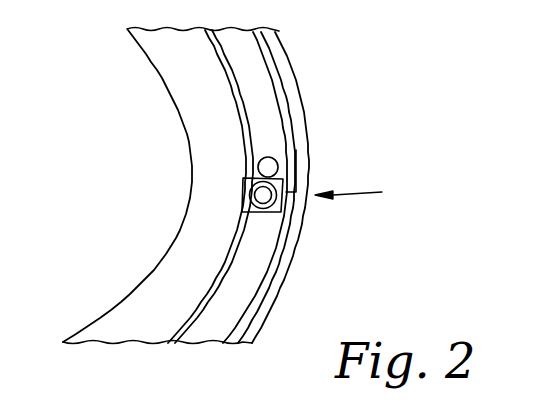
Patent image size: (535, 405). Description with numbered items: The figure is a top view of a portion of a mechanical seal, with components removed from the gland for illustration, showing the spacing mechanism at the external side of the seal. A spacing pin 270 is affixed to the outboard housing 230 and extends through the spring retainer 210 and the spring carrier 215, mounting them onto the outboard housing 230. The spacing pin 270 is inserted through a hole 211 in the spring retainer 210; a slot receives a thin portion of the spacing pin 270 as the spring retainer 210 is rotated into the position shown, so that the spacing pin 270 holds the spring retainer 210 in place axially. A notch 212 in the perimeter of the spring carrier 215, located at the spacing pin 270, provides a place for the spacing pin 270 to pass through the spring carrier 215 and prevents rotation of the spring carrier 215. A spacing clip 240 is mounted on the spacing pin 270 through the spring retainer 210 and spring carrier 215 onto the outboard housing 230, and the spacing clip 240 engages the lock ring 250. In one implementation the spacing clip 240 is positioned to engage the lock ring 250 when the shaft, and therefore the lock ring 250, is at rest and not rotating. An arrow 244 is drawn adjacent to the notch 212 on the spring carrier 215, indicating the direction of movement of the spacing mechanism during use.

The spring retainer 210 is at (247, 60).
The hole 211 is at (287, 157).
The notch 212 is at (286, 202).
The spring carrier 215 is at (281, 102).
The outboard housing 230 is at (275, 288).
The spacing clip 240 is at (274, 169).
The direction arrow 244 is at (371, 195).
The lock ring 250 is at (192, 72).
The spacing pin 270 is at (266, 198).